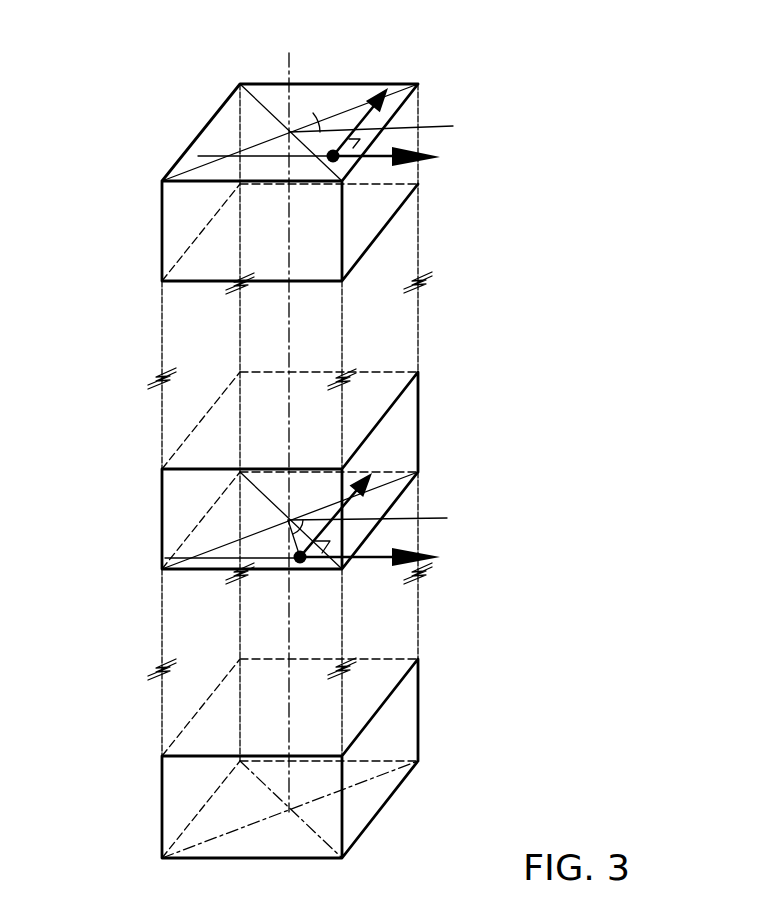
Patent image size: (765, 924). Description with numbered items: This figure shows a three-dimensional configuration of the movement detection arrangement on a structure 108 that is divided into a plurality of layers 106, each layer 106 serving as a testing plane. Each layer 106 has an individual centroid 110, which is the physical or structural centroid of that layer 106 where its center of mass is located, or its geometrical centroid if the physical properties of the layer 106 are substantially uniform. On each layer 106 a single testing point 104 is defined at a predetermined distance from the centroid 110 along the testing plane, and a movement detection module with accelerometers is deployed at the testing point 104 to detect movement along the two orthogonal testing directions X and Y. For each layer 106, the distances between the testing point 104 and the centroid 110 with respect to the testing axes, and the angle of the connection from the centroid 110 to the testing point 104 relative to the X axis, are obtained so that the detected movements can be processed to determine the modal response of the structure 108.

The testing point 104 is at (290, 132).
The layer 106 is at (200, 133).
The structure 108 is at (105, 791).
The centroid 110 is at (312, 160).